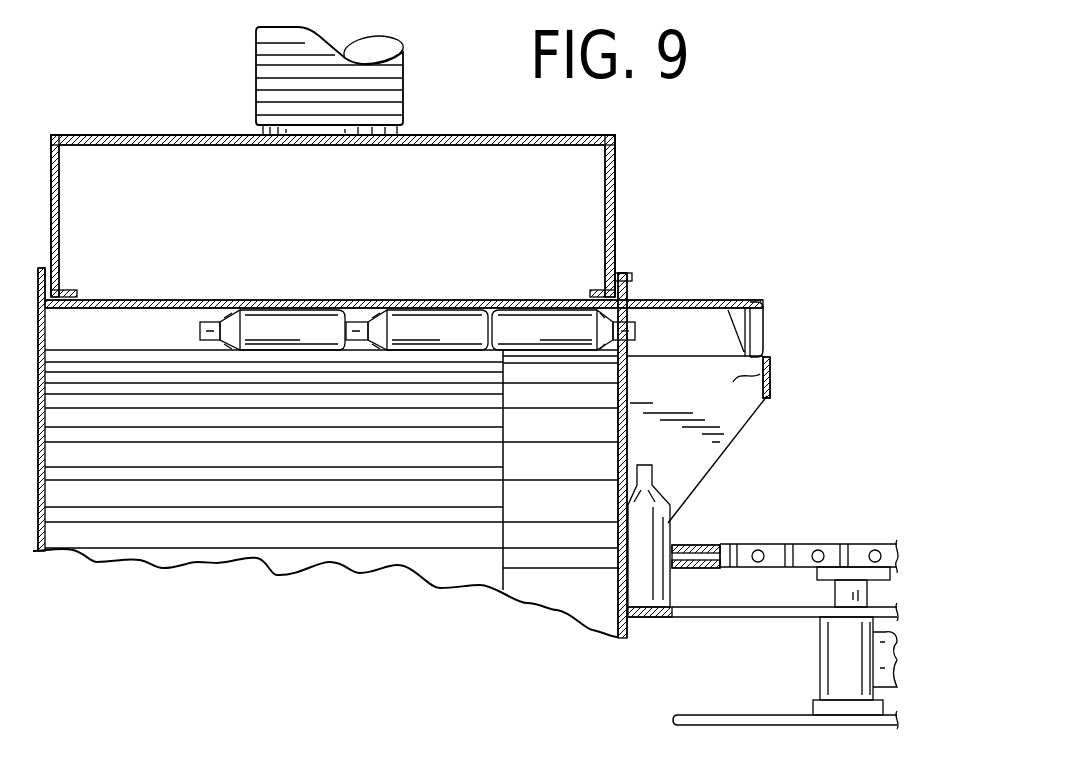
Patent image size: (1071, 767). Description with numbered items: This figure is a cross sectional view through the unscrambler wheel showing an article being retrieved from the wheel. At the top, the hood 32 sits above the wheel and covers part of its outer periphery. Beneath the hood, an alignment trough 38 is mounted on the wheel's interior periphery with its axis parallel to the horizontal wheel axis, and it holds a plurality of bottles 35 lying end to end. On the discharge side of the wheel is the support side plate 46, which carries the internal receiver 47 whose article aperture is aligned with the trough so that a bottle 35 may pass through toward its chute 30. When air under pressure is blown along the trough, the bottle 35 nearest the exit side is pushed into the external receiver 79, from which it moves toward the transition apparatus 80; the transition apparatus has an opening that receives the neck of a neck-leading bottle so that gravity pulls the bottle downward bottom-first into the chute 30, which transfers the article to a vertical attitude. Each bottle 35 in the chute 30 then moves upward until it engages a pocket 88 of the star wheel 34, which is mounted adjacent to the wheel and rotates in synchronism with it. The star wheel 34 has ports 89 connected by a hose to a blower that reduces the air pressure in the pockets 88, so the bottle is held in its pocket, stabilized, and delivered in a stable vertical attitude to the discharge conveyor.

The hood 32 is at (622, 162).
The alignment trough 38 is at (132, 323).
The bottle 35 is at (425, 320).
The internal receiver 47 is at (540, 310).
The external receiver 79 is at (690, 318).
The transition apparatus 80 is at (764, 329).
The chute 30 is at (772, 378).
The support side plate 46 is at (630, 430).
The pocket 88 is at (773, 545).
The port 89 is at (813, 562).
The star wheel 34 is at (847, 540).